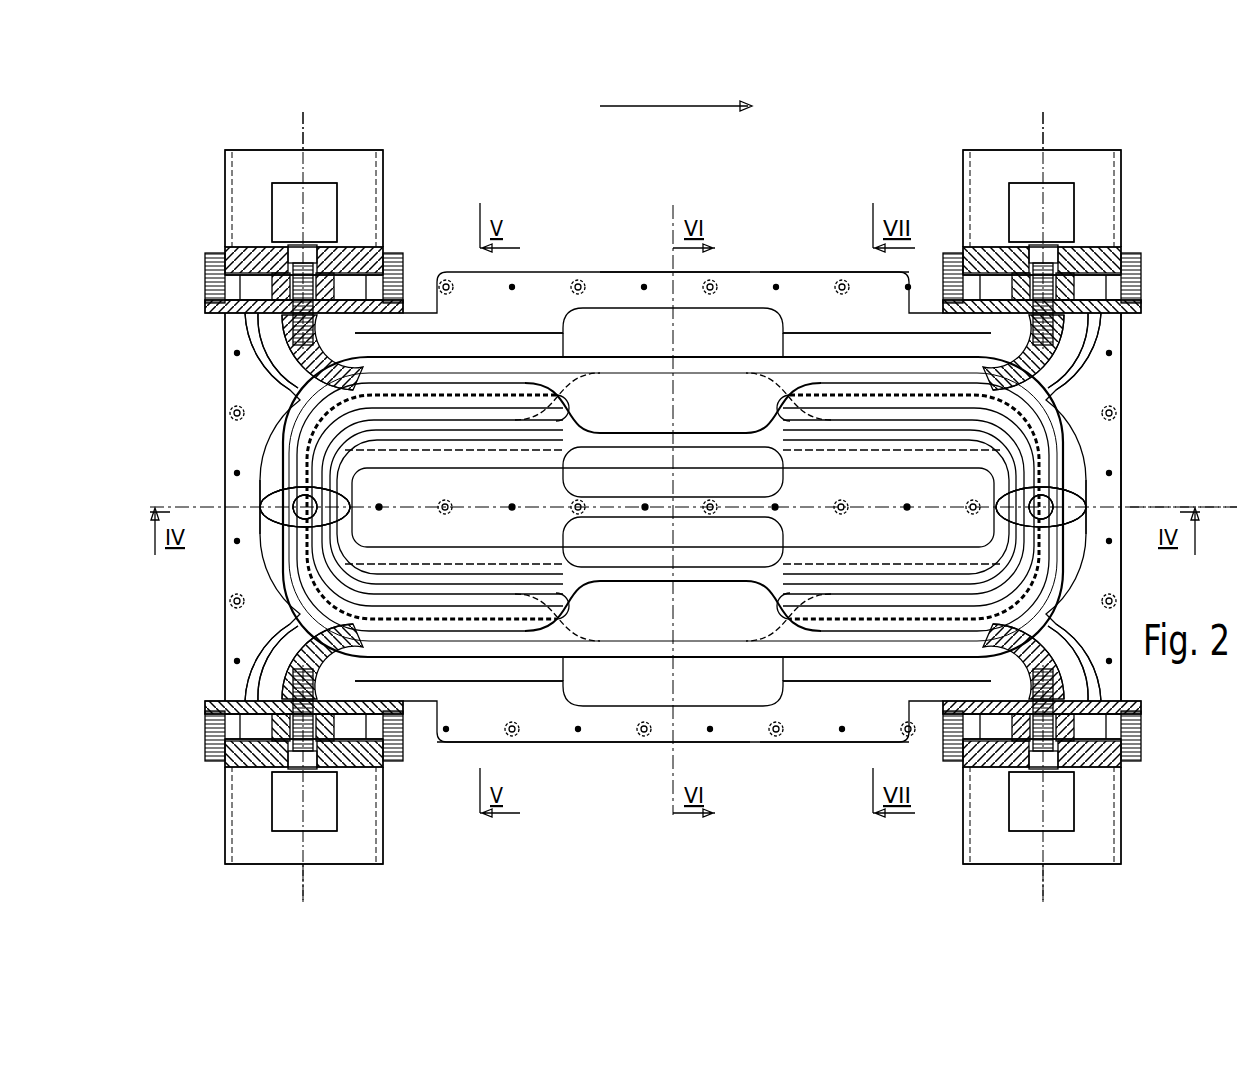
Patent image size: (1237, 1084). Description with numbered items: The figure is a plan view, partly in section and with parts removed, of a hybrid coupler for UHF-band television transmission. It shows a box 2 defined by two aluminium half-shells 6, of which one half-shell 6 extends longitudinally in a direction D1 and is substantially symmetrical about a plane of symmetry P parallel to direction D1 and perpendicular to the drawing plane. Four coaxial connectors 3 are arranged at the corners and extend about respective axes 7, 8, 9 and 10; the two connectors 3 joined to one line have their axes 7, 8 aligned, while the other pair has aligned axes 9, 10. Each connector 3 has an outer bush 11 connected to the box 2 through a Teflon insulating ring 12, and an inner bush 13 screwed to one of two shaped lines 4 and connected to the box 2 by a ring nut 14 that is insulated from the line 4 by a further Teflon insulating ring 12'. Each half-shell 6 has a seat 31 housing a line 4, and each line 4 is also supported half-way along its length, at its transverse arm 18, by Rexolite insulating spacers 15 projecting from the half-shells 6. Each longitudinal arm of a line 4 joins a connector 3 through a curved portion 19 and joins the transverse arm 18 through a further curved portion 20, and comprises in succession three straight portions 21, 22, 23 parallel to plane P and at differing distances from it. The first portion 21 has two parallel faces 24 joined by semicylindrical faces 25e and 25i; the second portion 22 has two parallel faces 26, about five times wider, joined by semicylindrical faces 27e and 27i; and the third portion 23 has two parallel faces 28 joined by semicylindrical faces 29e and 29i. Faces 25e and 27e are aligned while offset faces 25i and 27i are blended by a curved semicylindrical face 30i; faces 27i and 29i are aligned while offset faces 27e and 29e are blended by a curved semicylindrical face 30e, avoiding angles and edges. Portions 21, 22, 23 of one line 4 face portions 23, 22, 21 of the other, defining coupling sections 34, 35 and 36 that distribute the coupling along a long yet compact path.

The box 2 is at (1185, 340).
The connector 3 is at (397, 185).
The shaped line 4 is at (272, 562).
The half-shell 6 is at (1136, 378).
The axis 7 is at (303, 130).
The axis 8 is at (300, 884).
The axis 9 is at (1043, 130).
The axis 10 is at (1048, 895).
The outer bush 11 is at (225, 197).
The insulating ring 12 is at (671, 502).
The insulating ring 12' is at (674, 507).
The inner bush 13 is at (272, 200).
The ring nut 14 is at (205, 306).
The insulating spacer 15 is at (300, 500).
The transverse arm 18 is at (277, 547).
The curved portion 19 is at (254, 372).
The curved portion 20 is at (259, 421).
The straight portion 21 is at (400, 380).
The straight portion 22 is at (640, 400).
The straight portion 23 is at (418, 422).
The parallel face 24 is at (458, 378).
The semicylindrical face 25e is at (487, 367).
The semicylindrical face 25i is at (470, 390).
The parallel face 26 is at (628, 398).
The semicylindrical face 27e is at (693, 367).
The semicylindrical face 27i is at (690, 447).
The parallel face 28 is at (905, 430).
The semicylindrical face 29e is at (855, 395).
The semicylindrical face 29i is at (845, 438).
The semicylindrical face 30e is at (790, 410).
The semicylindrical face 30i is at (565, 470).
The seat 31 is at (657, 676).
The coupling section 34 is at (530, 352).
The coupling section 35 is at (670, 344).
The coupling section 36 is at (907, 321).
The longitudinal direction D1 is at (686, 106).
The plane of symmetry P is at (1205, 507).